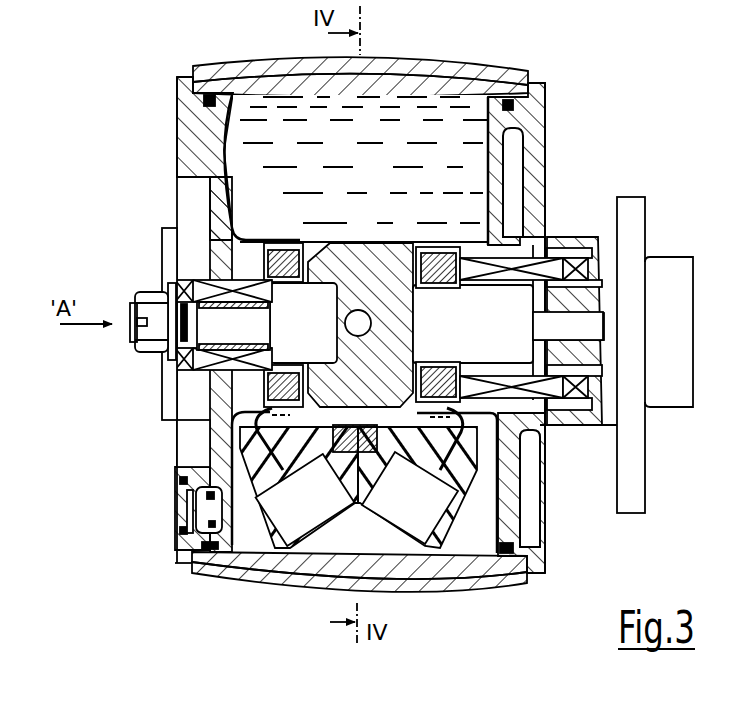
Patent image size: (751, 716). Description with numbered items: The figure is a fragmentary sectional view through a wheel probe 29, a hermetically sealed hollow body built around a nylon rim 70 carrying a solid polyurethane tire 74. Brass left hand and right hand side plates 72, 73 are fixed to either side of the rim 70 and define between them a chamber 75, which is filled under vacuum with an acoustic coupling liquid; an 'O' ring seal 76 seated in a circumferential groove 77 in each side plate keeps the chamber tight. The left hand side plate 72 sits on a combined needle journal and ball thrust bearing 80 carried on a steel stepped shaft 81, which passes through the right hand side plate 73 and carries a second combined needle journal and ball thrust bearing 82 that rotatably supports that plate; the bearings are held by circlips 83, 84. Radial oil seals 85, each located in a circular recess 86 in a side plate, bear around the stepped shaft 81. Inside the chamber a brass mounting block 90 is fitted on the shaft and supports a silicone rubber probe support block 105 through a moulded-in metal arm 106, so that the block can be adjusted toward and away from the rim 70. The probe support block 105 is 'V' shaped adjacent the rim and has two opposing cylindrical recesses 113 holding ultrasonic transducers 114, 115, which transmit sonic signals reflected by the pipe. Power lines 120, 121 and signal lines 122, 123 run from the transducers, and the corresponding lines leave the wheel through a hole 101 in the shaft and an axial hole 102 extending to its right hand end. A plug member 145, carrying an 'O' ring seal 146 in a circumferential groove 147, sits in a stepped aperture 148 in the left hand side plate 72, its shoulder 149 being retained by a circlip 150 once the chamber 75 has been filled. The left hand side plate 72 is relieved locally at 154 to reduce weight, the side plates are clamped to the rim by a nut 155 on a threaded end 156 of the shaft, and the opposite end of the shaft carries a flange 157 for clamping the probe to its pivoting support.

The wheel probe 29 is at (78, 602).
The rim 70 is at (410, 92).
The left hand side plate 72 is at (215, 392).
The right hand side plate 73 is at (516, 146).
The tire 74 is at (493, 70).
The chamber 75 is at (394, 191).
The 'O' ring seal 76 is at (200, 566).
The circumferential groove 77 is at (176, 566).
The combined needle journal and ball thrust bearing 80 is at (193, 270).
The stepped shaft 81 is at (537, 429).
The combined needle journal and ball thrust bearing 82 is at (582, 427).
The circlip 83 is at (228, 205).
The circlip 84 is at (543, 247).
The radial oil seal 85 is at (438, 247).
The circular recess 86 is at (270, 250).
The mounting block 90 is at (345, 300).
The hole 101 is at (335, 312).
The axial hole 102 is at (460, 314).
The probe support block 105 is at (320, 560).
The metal arm 106 is at (355, 440).
The cylindrical recess 113 is at (272, 565).
The ultrasonic transducer 114 is at (274, 510).
The ultrasonic transducer 115 is at (356, 405).
The power line 120 is at (250, 368).
The power line 121 is at (543, 533).
The signal line 122 is at (287, 363).
The signal line 123 is at (515, 565).
The plug member 145 is at (232, 553).
The 'O' ring seal 146 is at (262, 495).
The circumferential groove 147 is at (181, 532).
The stepped aperture 148 is at (181, 482).
The shoulder 149 is at (181, 503).
The circlip 150 is at (187, 478).
The relief 154 is at (180, 381).
The nut 155 is at (148, 290).
The threaded end 156 is at (132, 312).
The flange 157 is at (628, 205).